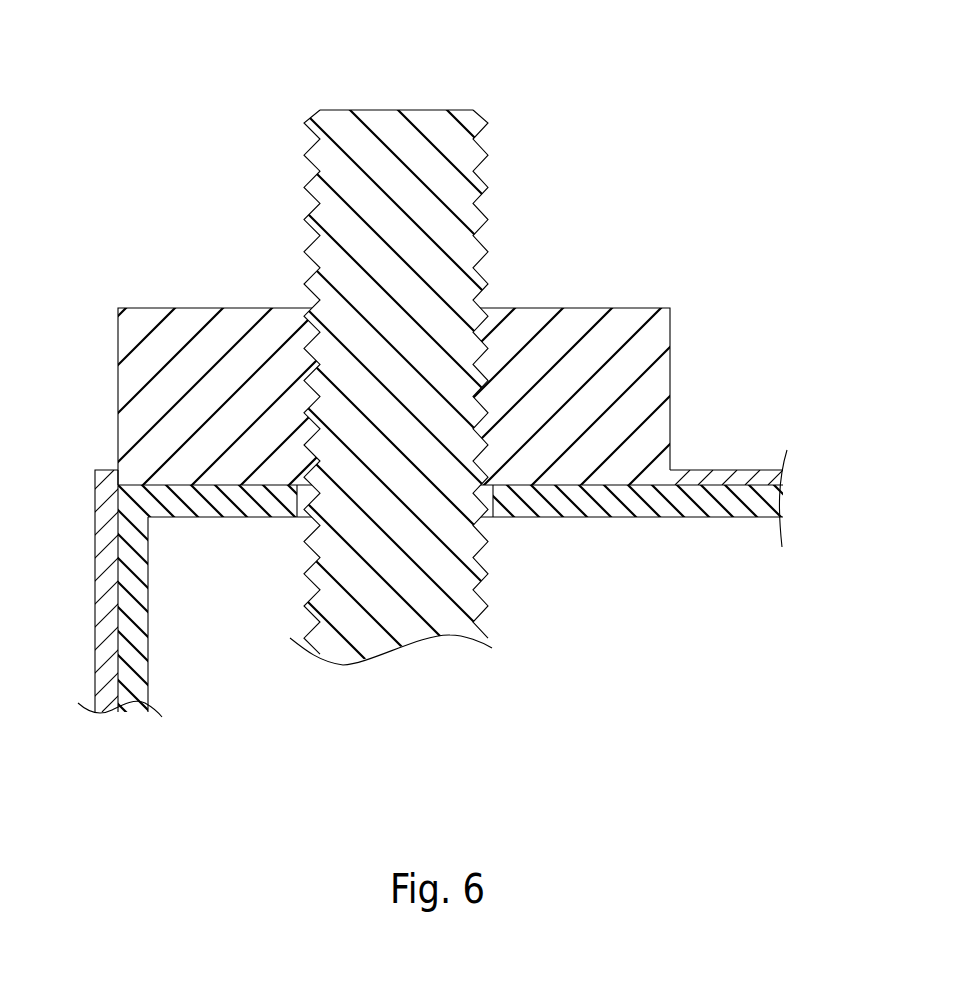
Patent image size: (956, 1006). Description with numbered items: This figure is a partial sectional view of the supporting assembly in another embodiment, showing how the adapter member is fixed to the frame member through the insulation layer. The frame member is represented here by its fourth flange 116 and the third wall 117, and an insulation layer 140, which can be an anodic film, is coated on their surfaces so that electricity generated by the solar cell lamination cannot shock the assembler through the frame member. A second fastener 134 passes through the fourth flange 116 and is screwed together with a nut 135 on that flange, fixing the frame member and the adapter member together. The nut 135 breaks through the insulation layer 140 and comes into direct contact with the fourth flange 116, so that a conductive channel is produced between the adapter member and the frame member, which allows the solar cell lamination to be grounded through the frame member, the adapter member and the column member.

The second fastener 134 is at (427, 117).
The nut 135 is at (573, 327).
The insulation layer 140 is at (730, 482).
The fourth flange 116 is at (632, 503).
The third wall 117 is at (137, 683).